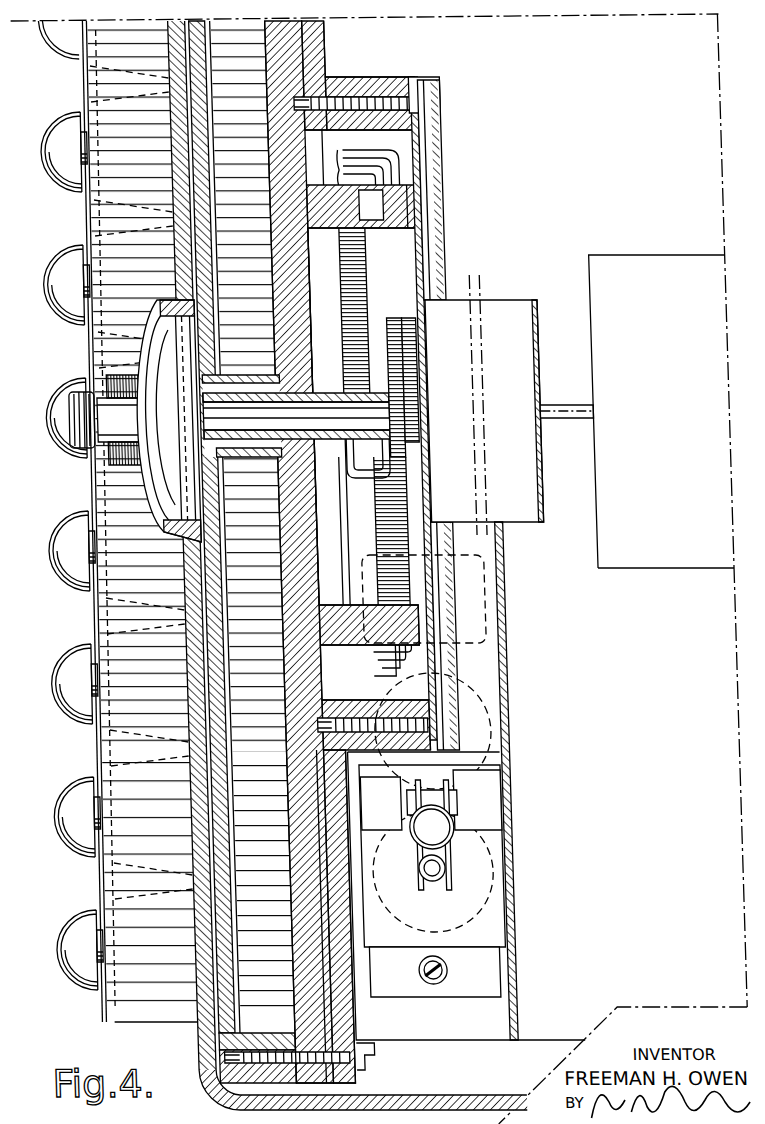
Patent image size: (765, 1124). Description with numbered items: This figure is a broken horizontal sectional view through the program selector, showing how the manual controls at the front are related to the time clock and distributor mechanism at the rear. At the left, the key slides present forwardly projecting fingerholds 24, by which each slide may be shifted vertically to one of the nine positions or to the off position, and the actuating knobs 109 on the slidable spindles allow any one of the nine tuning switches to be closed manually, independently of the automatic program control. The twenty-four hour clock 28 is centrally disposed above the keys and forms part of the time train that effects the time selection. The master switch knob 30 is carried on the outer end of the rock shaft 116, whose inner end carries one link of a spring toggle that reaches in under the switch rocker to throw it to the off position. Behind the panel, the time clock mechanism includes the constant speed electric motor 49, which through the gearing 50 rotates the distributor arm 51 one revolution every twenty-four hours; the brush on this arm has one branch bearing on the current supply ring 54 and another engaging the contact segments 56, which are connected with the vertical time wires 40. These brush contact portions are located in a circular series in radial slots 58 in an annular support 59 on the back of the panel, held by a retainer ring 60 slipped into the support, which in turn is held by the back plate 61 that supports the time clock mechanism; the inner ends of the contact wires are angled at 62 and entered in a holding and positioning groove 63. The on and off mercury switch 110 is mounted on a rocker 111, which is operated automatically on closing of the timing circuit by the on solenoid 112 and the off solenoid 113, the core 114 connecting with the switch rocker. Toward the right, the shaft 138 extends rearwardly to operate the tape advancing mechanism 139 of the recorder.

The fingerhold 24 is at (90, 228).
The twenty-four hour clock 28 is at (148, 460).
The master switch knob 30 is at (74, 426).
The vertical time wires 40 is at (249, 112).
The constant speed electric motor 49 is at (510, 300).
The gearing 50 is at (420, 324).
The distributor arm 51 is at (360, 479).
The current supply ring 54 is at (350, 290).
The contact segments 56 is at (396, 238).
The radial slots 58 is at (406, 188).
The annular support 59 is at (400, 180).
The retainer ring 60 is at (424, 202).
The back plate 61 is at (430, 250).
The angled inner ends 62 is at (355, 162).
The holding and positioning groove 63 is at (348, 186).
The actuating knobs 109 is at (64, 52).
The mercury switch 110 is at (440, 843).
The switch rocker 111 is at (444, 876).
The on solenoid 112 is at (498, 720).
The off solenoid 113 is at (505, 841).
The solenoid core 114 is at (426, 893).
The rock shaft 116 is at (82, 398).
The shaft 138 is at (566, 420).
The tape advancing mechanism 139 is at (632, 569).